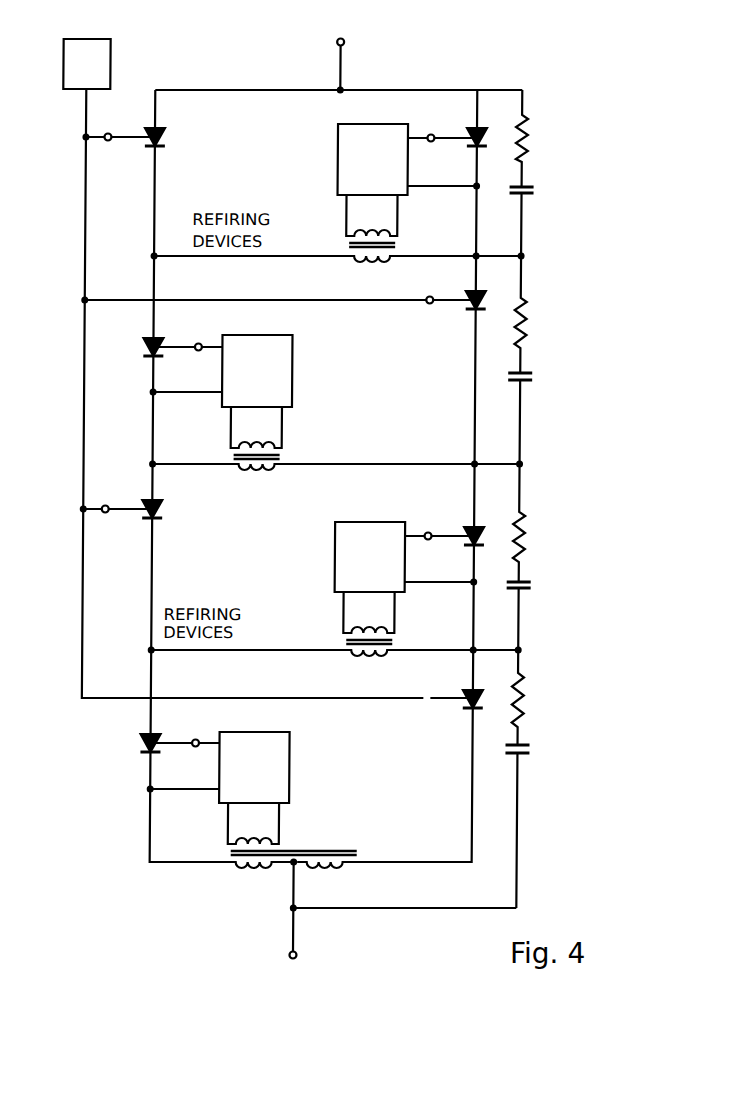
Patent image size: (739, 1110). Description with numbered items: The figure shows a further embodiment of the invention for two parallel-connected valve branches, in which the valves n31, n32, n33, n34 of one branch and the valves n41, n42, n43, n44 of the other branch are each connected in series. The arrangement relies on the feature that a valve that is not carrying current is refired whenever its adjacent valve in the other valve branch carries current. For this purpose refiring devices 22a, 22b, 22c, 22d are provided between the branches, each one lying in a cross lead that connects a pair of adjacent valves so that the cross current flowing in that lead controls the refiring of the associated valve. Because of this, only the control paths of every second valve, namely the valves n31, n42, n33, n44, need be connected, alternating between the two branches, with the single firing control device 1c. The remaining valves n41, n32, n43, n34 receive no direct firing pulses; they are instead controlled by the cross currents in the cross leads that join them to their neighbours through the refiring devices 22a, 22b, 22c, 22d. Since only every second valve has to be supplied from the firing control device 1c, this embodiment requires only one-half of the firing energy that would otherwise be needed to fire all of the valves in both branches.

The firing control device 1c is at (150, 23).
The valve n31 is at (163, 128).
The valve n32 is at (160, 338).
The valve n33 is at (166, 507).
The valve n34 is at (161, 738).
The valve n41 is at (472, 130).
The valve n42 is at (469, 306).
The valve n43 is at (473, 529).
The valve n44 is at (472, 693).
The refiring device 22a is at (275, 221).
The refiring device 22b is at (265, 239).
The refiring device 22c is at (248, 623).
The refiring device 22d is at (241, 633).